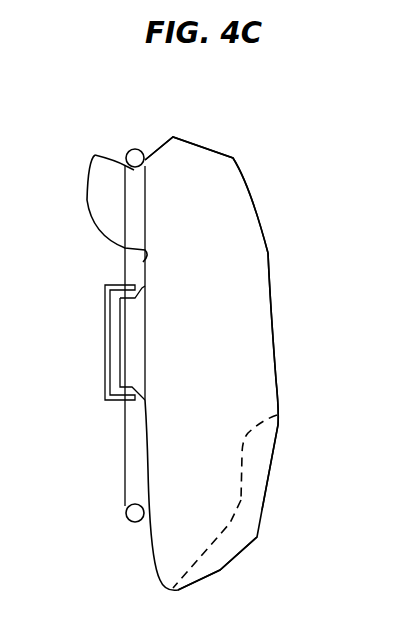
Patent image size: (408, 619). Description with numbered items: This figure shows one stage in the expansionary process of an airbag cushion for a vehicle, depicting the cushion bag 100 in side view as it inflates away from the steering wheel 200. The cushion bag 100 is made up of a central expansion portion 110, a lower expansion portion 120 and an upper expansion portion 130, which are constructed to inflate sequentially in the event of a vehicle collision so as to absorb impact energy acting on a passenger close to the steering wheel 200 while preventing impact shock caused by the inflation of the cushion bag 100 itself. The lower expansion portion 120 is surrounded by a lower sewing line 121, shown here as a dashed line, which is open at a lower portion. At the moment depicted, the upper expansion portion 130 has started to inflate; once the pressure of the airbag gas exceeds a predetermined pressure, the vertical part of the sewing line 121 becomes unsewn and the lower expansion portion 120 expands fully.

The cushion bag 100 is at (262, 138).
The central expansion portion 110 is at (255, 328).
The lower expansion portion 120 is at (260, 457).
The lower sewing line 121 is at (227, 527).
The upper expansion portion 130 is at (240, 193).
The steering wheel 200 is at (135, 452).